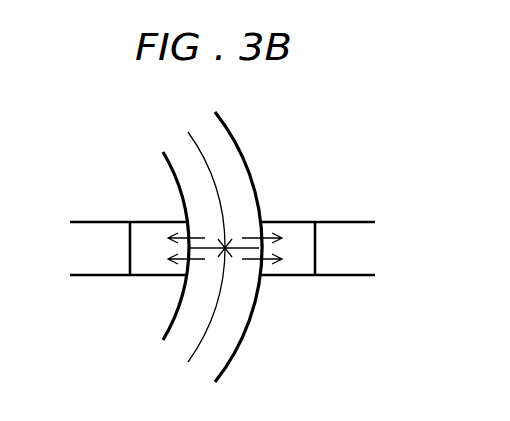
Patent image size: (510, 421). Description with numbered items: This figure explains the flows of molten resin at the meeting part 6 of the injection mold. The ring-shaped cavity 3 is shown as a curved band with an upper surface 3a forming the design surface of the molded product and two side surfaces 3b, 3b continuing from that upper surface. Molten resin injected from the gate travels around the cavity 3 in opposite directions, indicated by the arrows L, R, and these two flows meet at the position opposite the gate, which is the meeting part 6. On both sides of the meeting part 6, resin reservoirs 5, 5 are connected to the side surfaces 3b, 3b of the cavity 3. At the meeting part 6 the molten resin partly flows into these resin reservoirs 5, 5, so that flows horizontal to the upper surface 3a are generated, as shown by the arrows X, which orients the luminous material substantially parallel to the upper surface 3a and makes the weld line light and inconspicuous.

The cavity 3 is at (198, 233).
The upper surface 3a is at (235, 181).
The side surface 3b is at (173, 184).
The resin reservoir 5 is at (82, 226).
The meeting part 6 is at (239, 246).
The arrow (resin flow direction) L is at (210, 177).
The arrow (resin flow direction) R is at (215, 313).